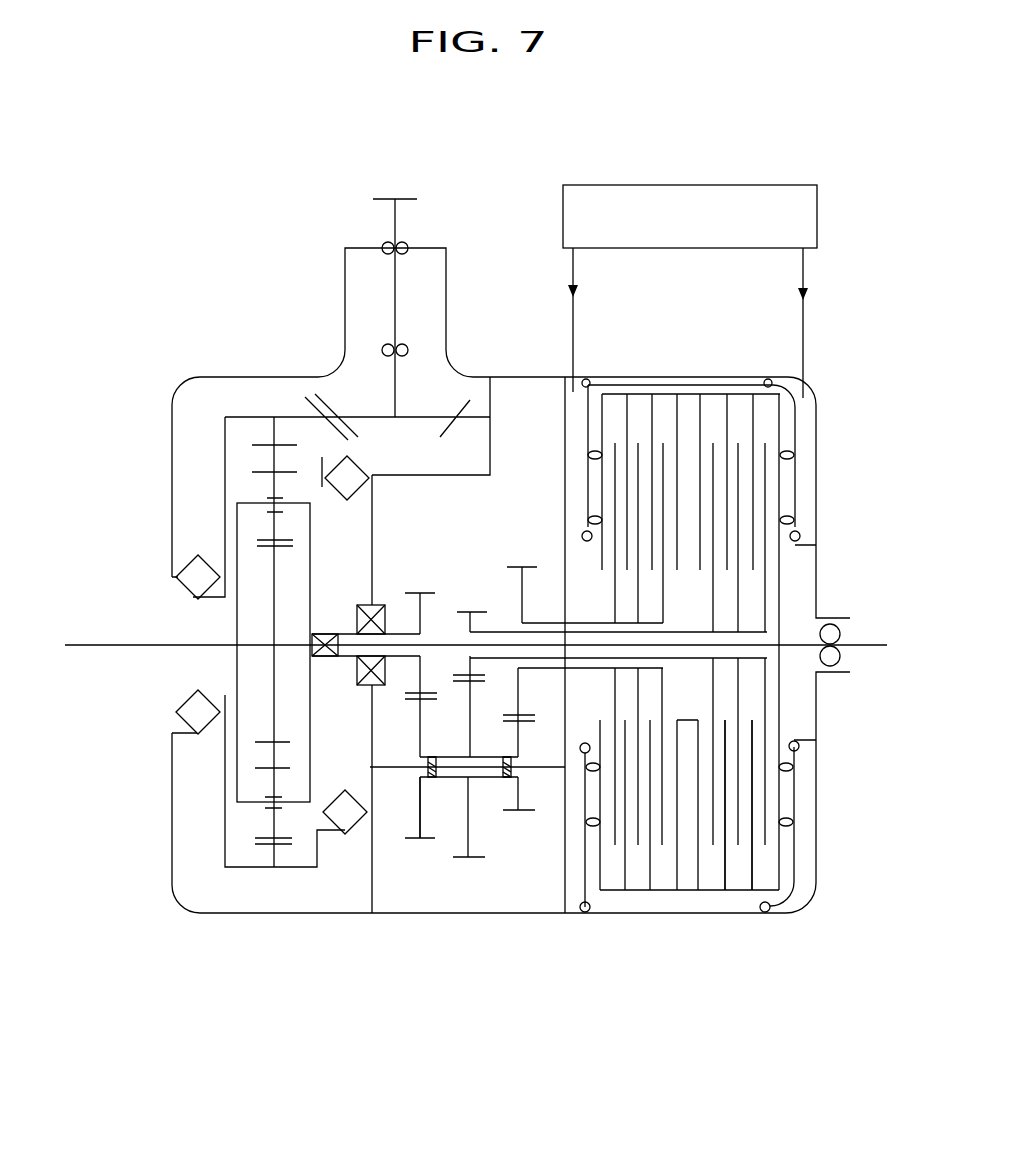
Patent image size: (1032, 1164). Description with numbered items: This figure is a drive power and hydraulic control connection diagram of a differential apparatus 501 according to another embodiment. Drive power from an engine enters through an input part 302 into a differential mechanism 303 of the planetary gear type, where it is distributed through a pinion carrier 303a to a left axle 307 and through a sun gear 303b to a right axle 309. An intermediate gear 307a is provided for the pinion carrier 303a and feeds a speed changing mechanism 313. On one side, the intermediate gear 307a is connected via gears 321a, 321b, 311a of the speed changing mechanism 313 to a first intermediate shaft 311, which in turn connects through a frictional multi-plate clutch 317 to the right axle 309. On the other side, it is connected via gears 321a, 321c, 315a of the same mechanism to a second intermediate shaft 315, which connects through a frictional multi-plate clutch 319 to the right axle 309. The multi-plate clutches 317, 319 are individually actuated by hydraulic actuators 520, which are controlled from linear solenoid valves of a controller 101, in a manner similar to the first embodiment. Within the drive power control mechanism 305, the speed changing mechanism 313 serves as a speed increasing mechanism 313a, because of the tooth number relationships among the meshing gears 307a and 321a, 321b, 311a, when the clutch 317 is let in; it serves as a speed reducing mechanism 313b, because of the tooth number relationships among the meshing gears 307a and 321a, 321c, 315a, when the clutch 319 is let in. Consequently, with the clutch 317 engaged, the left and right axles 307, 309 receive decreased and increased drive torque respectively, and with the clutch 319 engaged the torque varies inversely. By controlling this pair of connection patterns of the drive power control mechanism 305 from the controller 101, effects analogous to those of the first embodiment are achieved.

The differential apparatus 501 is at (280, 295).
The input part 302 is at (397, 225).
The controller 101 is at (713, 185).
The hydraulic actuators 520 is at (590, 413).
The differential mechanism 303 is at (205, 659).
The pinion carrier 303a is at (232, 543).
The sun gear 303b is at (270, 723).
The left axle 307 is at (90, 645).
The intermediate gear 307a is at (420, 670).
The first intermediate shaft 311 is at (687, 657).
The gear 311a is at (497, 595).
The second intermediate shaft 315 is at (575, 668).
The gear 315a is at (520, 602).
The right axle 309 is at (878, 655).
The speed changing mechanism 313 is at (447, 882).
The speed increasing mechanism 313a is at (434, 845).
The speed reducing mechanism 313b is at (527, 812).
The drive power control mechanism 305 is at (544, 890).
The gear 321a is at (420, 822).
The gear 321b is at (477, 858).
The gear 321c is at (494, 822).
The frictional multi-plate clutch 319 is at (653, 896).
The frictional multi-plate clutch 317 is at (743, 896).